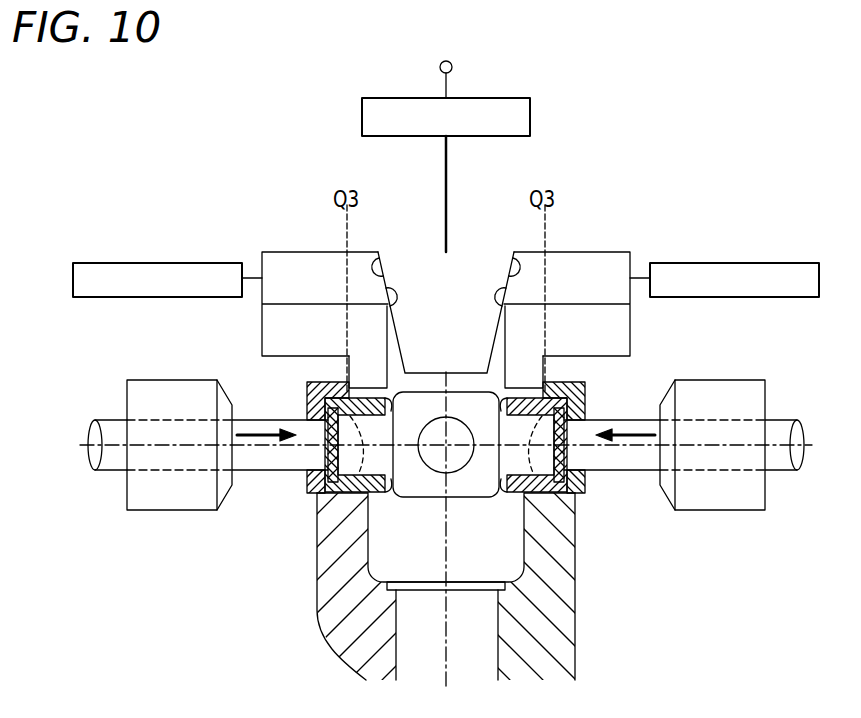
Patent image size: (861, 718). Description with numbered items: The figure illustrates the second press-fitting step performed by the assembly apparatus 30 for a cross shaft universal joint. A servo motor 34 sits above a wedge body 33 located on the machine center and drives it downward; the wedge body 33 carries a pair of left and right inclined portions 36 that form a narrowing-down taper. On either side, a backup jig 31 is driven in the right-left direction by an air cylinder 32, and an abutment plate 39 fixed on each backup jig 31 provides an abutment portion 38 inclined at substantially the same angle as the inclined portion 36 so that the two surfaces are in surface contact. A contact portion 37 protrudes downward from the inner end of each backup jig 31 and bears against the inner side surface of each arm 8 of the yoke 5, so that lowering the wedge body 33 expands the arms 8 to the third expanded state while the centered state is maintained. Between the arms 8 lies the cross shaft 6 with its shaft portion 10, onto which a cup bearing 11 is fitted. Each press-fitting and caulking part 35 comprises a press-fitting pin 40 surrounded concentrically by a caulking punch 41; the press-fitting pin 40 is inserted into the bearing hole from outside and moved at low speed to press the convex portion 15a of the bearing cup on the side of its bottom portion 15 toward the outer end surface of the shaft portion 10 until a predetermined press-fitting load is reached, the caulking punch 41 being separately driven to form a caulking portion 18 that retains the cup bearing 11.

The yoke 5 is at (598, 628).
The cross shaft 6 is at (437, 502).
The arm 8 is at (340, 556).
The shaft portion 10 is at (454, 461).
The cup bearing 11 is at (343, 490).
The bottom portion 15 is at (323, 410).
The convex portion 15a is at (560, 484).
The caulking portion 18 is at (322, 478).
The assembly apparatus 30 is at (632, 198).
The backup jig 31 is at (290, 333).
The air cylinder 32 is at (152, 263).
The wedge body 33 is at (446, 277).
The servo motor 34 is at (480, 100).
The press-fitting and caulking part 35 is at (176, 373).
The inclined portion 36 is at (384, 272).
The contact portion 37 is at (348, 372).
The abutment portion 38 is at (388, 310).
The abutment plate 39 is at (290, 268).
The press-fitting pin 40 is at (260, 430).
The caulking punch 41 is at (150, 387).